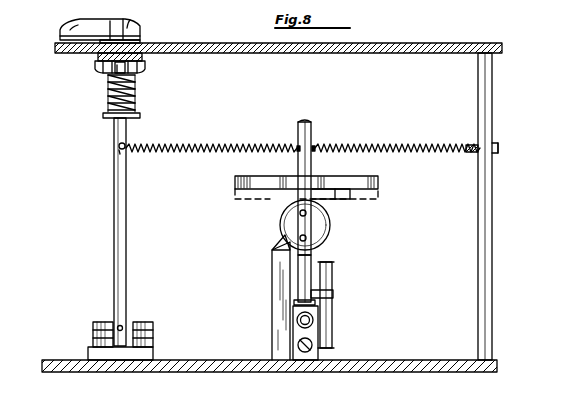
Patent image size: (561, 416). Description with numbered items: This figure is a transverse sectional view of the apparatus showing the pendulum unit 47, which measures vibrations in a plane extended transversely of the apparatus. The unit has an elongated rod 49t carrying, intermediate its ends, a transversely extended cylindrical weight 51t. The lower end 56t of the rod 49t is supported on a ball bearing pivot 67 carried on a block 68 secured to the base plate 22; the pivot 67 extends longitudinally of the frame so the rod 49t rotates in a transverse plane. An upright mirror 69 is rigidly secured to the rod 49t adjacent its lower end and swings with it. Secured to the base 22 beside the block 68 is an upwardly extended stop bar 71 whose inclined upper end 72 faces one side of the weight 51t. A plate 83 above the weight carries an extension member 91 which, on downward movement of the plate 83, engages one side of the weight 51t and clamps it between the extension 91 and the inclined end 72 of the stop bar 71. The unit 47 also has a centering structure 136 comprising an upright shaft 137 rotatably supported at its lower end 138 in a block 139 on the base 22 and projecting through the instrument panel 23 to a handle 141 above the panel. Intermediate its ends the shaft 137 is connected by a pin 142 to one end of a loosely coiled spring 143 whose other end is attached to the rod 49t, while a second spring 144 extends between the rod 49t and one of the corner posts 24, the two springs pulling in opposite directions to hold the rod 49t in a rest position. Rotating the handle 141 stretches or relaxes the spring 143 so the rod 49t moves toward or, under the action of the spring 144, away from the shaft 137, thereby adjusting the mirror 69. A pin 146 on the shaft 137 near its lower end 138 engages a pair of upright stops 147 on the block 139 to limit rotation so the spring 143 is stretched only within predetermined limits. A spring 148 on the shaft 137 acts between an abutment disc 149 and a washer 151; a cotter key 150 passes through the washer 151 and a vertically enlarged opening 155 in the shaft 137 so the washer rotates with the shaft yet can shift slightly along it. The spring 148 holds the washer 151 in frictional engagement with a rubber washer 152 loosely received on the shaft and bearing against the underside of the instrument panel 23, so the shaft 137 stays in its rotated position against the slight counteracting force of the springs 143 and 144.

The base plate 22 is at (182, 368).
The instrument panel 23 is at (242, 46).
The corner post 24 is at (494, 180).
The pendulum unit 47 is at (380, 217).
The rod 49t is at (312, 127).
The cylindrical weight 51t is at (282, 223).
The lower end of rod 56t is at (334, 293).
The ball bearing pivot 67 is at (295, 320).
The block 68 is at (300, 355).
The upright mirror 69 is at (334, 325).
The stop bar 71 is at (272, 300).
The inclined upper end 72 is at (273, 252).
The plate 83 is at (376, 177).
The extension member 91 is at (352, 193).
The centering structure 136 is at (85, 183).
The upright shaft 137 is at (114, 214).
The lower end of shaft 138 is at (120, 340).
The block 139 is at (154, 352).
The handle 141 is at (63, 27).
The pin 142 is at (117, 147).
The loosely coiled spring 143 is at (152, 144).
The second spring 144 is at (418, 145).
The pin 146 is at (119, 325).
The upright stops 147 is at (93, 330).
The spring 148 is at (137, 97).
The abutment disc 149 is at (141, 117).
The cotter key 150 is at (146, 70).
The washer 151 is at (96, 70).
The rubber washer 152 is at (97, 57).
The vertically enlarged opening 155 is at (146, 44).